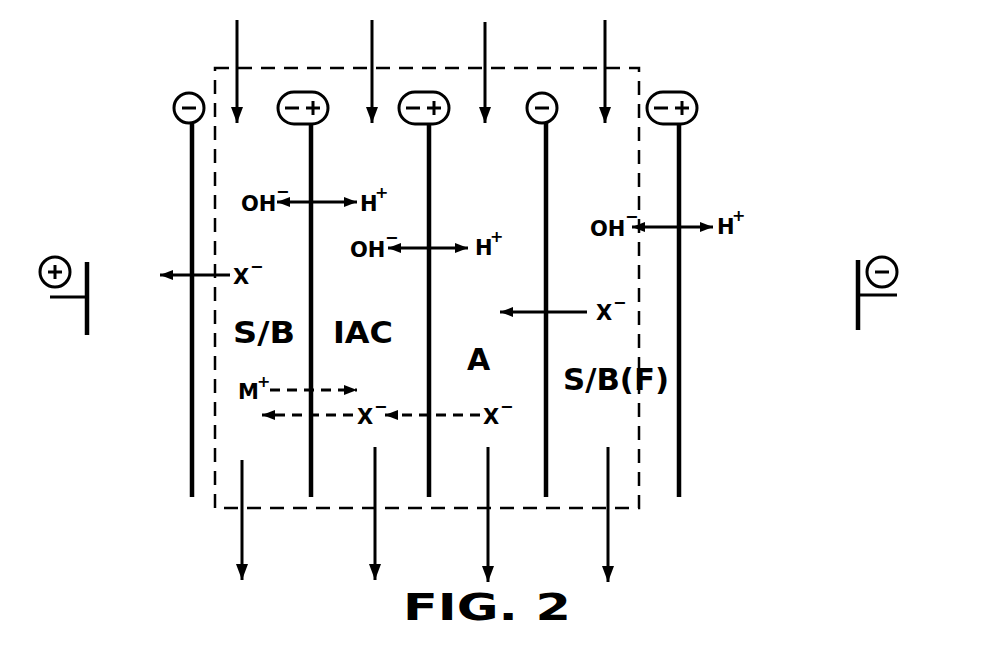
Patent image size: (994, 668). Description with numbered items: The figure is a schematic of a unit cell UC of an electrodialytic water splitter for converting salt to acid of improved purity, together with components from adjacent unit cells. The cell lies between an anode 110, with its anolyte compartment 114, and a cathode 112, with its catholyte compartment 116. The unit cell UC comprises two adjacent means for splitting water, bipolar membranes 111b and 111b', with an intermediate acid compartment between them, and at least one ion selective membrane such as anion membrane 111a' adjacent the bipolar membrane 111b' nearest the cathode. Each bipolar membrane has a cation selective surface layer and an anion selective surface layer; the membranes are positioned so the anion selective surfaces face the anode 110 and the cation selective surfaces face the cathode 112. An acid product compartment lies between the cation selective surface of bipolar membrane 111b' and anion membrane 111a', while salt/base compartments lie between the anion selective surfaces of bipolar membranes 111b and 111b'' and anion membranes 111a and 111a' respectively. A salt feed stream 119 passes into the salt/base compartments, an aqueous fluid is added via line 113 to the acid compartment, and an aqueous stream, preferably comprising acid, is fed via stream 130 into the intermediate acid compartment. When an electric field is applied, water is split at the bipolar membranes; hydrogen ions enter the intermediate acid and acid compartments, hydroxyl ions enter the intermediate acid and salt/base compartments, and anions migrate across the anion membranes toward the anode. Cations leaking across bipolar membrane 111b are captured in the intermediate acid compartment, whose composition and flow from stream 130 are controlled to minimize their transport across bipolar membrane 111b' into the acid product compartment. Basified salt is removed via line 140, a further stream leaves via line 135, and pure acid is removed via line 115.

The unit cell UC is at (638, 70).
The anode 110 is at (91, 319).
The cathode 112 is at (856, 318).
The anion membrane 111a is at (161, 295).
The anion membrane 111a' is at (519, 295).
The bipolar membrane 111b is at (289, 294).
The bipolar membrane 111b' is at (413, 294).
The bipolar membrane 111b'' is at (695, 294).
The line 113 is at (484, 43).
The anolyte compartment 114 is at (141, 272).
The line 115 is at (486, 553).
The catholyte compartment 116 is at (799, 272).
The salt feed stream 119 is at (236, 44).
The feed stream 130 is at (371, 45).
The base product stream 135 is at (373, 547).
The line 140 is at (240, 543).